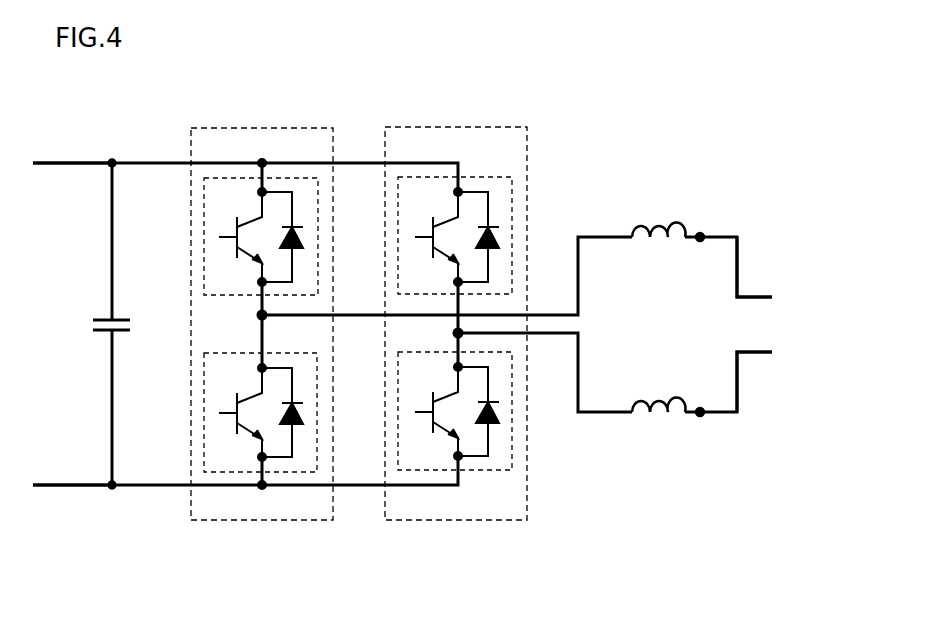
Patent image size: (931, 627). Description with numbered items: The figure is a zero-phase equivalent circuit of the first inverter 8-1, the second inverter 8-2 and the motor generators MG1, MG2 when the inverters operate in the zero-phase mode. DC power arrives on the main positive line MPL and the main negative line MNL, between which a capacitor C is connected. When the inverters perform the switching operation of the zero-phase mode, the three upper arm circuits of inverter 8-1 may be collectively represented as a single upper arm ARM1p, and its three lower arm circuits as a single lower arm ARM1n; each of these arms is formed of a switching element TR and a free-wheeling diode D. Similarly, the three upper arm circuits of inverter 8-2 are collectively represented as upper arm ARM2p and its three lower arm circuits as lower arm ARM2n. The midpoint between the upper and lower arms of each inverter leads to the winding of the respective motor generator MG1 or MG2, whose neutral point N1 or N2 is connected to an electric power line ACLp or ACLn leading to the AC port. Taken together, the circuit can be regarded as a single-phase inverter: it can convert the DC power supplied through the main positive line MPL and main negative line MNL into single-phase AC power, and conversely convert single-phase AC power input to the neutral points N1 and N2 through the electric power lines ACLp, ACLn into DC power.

The main positive line MPL is at (70, 163).
The main negative line MNL is at (70, 488).
The capacitor C is at (119, 320).
The first inverter 8-1 is at (217, 127).
The second inverter 8-2 is at (425, 127).
The upper arm ARM1p is at (272, 185).
The lower arm ARM1n is at (225, 472).
The upper arm ARM2p is at (497, 177).
The lower arm ARM2n is at (479, 470).
The switching element TR is at (231, 253).
The free-wheeling diode D is at (269, 239).
The motor generator MG1 is at (665, 213).
The motor generator MG2 is at (665, 427).
The neutral point N1 is at (703, 234).
The neutral point N2 is at (703, 415).
The electric power line ACLp is at (738, 258).
The electric power line ACLn is at (738, 388).